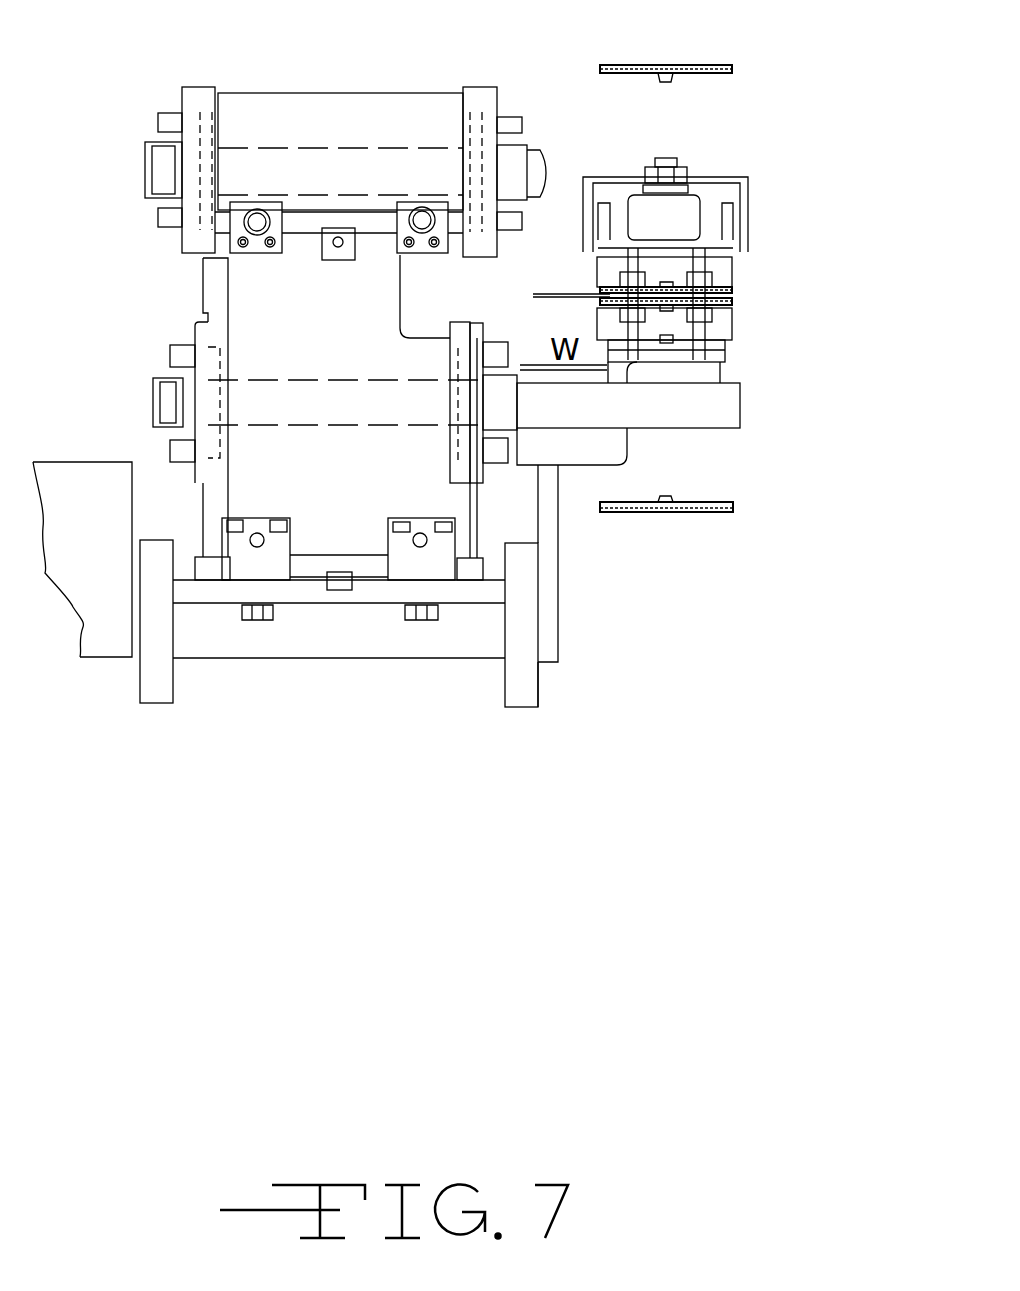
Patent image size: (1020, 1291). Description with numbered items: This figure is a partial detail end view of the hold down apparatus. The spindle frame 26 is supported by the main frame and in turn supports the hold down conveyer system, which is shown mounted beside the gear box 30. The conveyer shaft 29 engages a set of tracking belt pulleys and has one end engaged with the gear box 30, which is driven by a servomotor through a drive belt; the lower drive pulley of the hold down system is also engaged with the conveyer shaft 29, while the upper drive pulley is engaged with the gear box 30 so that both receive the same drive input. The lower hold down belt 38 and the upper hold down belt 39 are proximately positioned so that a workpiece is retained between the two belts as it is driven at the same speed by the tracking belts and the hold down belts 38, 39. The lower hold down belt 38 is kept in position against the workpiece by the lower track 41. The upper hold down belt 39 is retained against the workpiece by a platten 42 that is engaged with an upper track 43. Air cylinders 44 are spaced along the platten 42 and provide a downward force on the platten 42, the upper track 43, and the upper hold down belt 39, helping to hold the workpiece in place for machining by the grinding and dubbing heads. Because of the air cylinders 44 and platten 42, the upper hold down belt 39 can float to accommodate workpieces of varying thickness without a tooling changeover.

The spindle frame 26 is at (527, 594).
The conveyer shaft 29 is at (722, 420).
The gear box 30 is at (245, 302).
The lower hold down belt 38 is at (735, 318).
The upper hold down belt 39 is at (640, 65).
The lower track 41 is at (728, 334).
The platten 42 is at (728, 238).
The upper track 43 is at (748, 248).
The air cylinders 44 is at (687, 207).